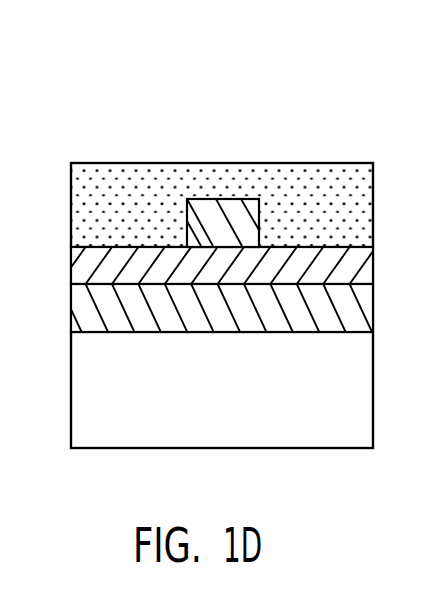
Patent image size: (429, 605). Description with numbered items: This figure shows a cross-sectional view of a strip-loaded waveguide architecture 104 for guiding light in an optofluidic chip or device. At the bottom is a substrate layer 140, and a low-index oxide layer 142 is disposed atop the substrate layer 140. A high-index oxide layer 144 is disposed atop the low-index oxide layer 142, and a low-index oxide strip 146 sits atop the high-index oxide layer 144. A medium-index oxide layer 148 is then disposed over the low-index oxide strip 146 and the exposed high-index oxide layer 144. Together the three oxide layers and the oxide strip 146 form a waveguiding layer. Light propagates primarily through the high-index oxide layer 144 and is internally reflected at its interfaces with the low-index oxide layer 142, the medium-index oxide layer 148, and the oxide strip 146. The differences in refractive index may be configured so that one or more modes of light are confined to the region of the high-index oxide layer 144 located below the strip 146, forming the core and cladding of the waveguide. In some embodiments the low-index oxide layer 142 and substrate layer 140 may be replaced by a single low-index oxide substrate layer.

The strip-loaded waveguide architecture 104 is at (78, 120).
The substrate layer 140 is at (357, 390).
The low-index oxide layer 142 is at (358, 317).
The high-index oxide layer 144 is at (358, 270).
The low-index oxide strip 146 is at (220, 202).
The medium-index oxide layer 148 is at (113, 172).